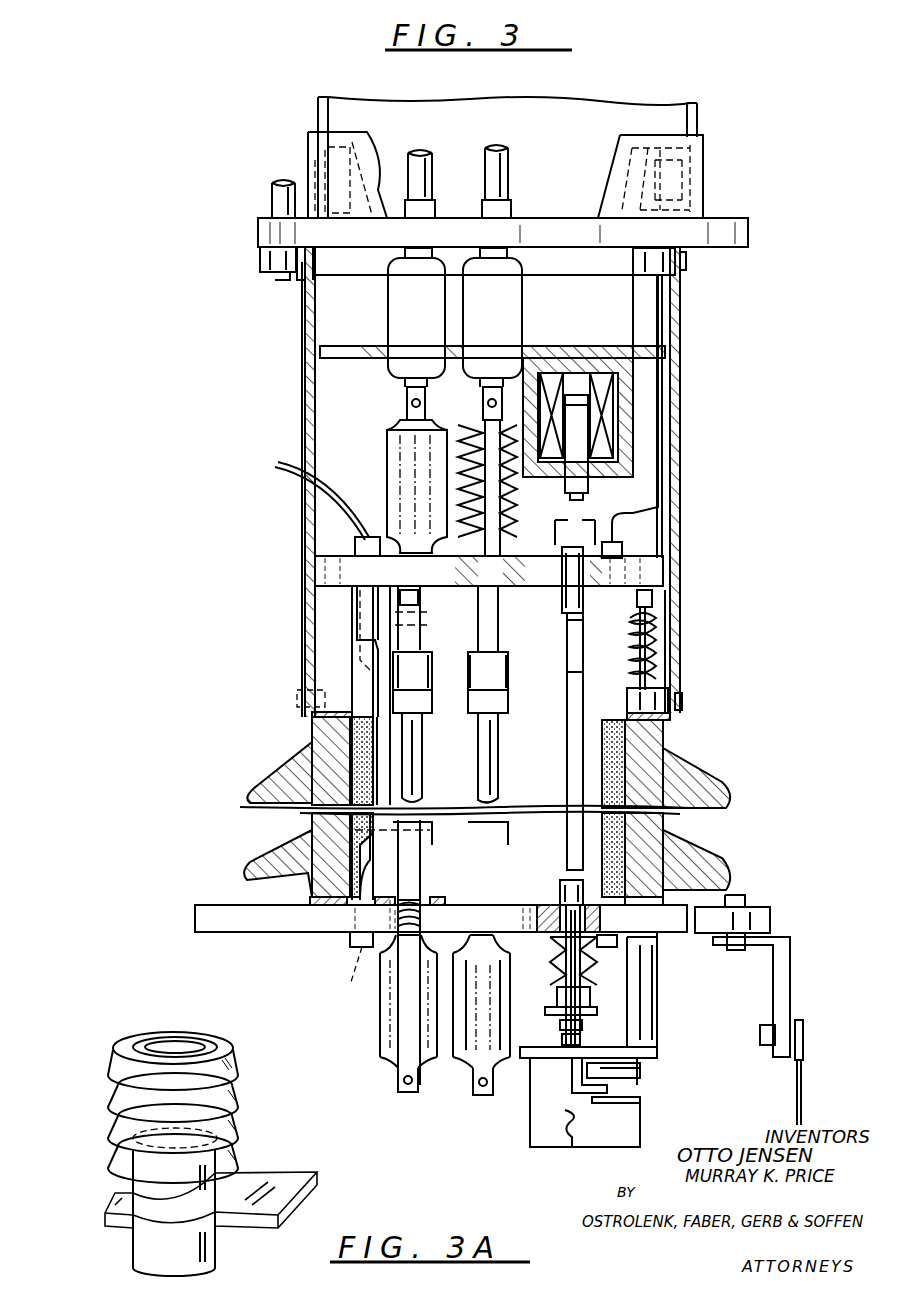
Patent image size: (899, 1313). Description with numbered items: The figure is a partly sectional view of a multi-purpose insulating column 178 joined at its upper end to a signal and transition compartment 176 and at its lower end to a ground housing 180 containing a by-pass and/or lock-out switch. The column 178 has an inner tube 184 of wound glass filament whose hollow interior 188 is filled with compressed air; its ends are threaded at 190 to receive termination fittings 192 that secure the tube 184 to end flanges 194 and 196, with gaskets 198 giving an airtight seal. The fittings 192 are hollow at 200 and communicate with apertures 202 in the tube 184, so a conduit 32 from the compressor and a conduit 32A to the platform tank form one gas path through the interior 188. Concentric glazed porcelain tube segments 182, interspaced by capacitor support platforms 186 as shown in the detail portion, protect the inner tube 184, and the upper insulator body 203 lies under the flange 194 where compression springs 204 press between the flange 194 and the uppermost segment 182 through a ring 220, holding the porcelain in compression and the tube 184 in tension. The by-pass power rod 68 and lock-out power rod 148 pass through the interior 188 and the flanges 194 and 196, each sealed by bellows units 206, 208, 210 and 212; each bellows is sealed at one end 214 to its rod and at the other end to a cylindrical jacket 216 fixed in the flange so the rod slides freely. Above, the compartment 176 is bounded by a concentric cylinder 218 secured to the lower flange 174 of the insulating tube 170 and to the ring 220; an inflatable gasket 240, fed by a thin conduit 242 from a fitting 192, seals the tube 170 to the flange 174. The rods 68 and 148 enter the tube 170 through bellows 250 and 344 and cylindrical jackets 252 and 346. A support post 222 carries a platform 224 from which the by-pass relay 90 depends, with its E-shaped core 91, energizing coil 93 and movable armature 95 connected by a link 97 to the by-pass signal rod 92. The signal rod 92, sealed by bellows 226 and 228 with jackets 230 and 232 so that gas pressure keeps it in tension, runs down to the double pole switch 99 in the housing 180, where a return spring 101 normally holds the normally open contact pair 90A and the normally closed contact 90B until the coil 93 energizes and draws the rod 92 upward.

In FIG. 3, the insulating tube 170 is at (700, 116).
In FIG. 3, the signal and transition compartment 176 is at (299, 364).
In FIG. 3, the inflatable gasket 240 is at (682, 183).
In FIG. 3, the lower flange 174 is at (730, 220).
In FIG. 3, the cylindrical jacket 346 is at (434, 210).
In FIG. 3, the by-pass power rod 68 is at (470, 1125).
In FIG. 3, the cylindrical jacket 252 is at (512, 210).
In FIG. 3, the concentric cylinder 218 is at (302, 398).
In FIG. 3, the thin conduit 242 is at (683, 333).
In FIG. 3, the support post 222 is at (633, 322).
In FIG. 3, the bellows 344 is at (388, 303).
In FIG. 3, the bellows 250 is at (528, 305).
In FIG. 3, the bellows seal end 214 is at (483, 415).
In FIG. 3, the platform 224 is at (560, 335).
In FIG. 3, the by-pass relay 90 is at (633, 428).
In FIG. 3, the E-shaped core 91 is at (633, 382).
In FIG. 3, the energizing coil 93 is at (600, 452).
In FIG. 3, the movable armature 95 is at (580, 478).
In FIG. 3, the bellows unit 206 is at (387, 440).
In FIG. 3, the bellows unit 212 is at (517, 515).
In FIG. 3, the link 97 is at (588, 510).
In FIG. 3, the bellows 228 is at (556, 543).
In FIG. 3, the end flange 194 is at (315, 570).
In FIG. 3, the conduit 32A is at (348, 499).
In FIG. 3, the termination fittings 192 is at (350, 940).
In FIG. 3, the gaskets 198 is at (455, 862).
In FIG. 3, the cylindrical jacket 216 is at (480, 595).
In FIG. 3, the circumferential threads 190 is at (430, 620).
In FIG. 3, the apertures 202 is at (395, 830).
In FIG. 3, the hollow 200 is at (345, 885).
In FIG. 3, the cylindrical jacket 230 is at (562, 600).
In FIG. 3, the by-pass signal rod 92 is at (552, 672).
In FIG. 3, the compression springs 204 is at (655, 635).
In FIG. 3, the ring 220 is at (680, 680).
In FIG. 3, the inner tube 184 is at (525, 735).
In FIG. 3A, the inner tube 184 is at (133, 1248).
In FIG. 3, the insulator body 203 is at (312, 735).
In FIG. 3, the hollow interior 188 is at (560, 778).
In FIG. 3, the porcelain tube segments 182 is at (245, 867).
In FIG. 3A, the porcelain tube segments 182 is at (118, 1105).
In FIG. 3, the insulating column 178 is at (730, 845).
In FIG. 3, the end flange 196 is at (236, 932).
In FIG. 3, the ground housing 180 is at (792, 960).
In FIG. 3, the conduit 32 is at (348, 968).
In FIG. 3, the bellows unit 208 is at (380, 1015).
In FIG. 3, the lock-out power rod 148 is at (403, 1095).
In FIG. 3, the cylindrical jacket 232 is at (556, 895).
In FIG. 3, the bellows 226 is at (550, 965).
In FIG. 3, the bellows unit 210 is at (556, 1026).
In FIG. 3, the double pole switch 99 is at (665, 1075).
In FIG. 3, the normally open contact pair 90A is at (595, 1072).
In FIG. 3, the normally closed contact 90B is at (582, 1105).
In FIG. 3, the return spring 101 is at (572, 1147).
In FIG. 3A, the capacitor support platforms 186 is at (273, 1163).